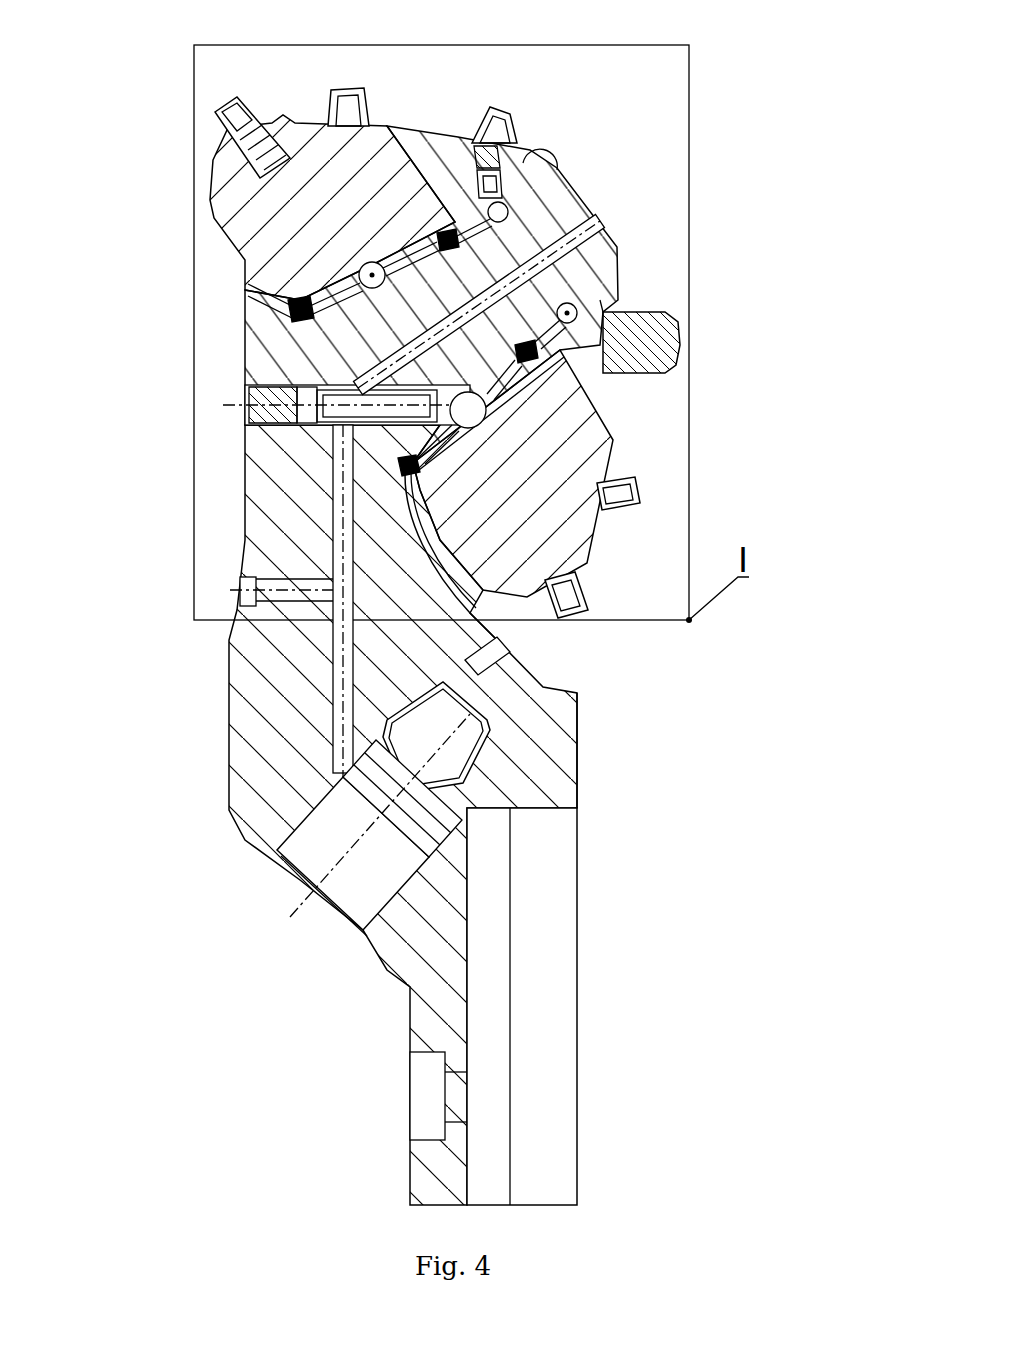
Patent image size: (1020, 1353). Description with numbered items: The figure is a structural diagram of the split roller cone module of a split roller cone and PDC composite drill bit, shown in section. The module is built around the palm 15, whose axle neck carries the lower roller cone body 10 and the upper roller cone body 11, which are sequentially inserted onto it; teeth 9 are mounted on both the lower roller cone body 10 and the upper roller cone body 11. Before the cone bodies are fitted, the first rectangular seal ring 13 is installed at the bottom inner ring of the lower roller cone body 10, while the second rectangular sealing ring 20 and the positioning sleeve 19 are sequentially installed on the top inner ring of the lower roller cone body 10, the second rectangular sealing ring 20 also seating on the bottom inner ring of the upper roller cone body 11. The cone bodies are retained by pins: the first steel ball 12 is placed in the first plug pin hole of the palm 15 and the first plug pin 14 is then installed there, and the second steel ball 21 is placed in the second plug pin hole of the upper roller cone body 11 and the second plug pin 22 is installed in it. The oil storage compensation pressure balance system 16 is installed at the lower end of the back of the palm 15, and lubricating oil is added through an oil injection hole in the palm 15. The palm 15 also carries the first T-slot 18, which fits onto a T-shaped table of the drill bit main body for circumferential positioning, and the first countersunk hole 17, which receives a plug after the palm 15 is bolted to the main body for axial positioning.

The tooth 9 is at (199, 116).
The lower roller cone body 10 is at (277, 207).
The upper roller cone body 11 is at (359, 294).
The first steel ball 12 is at (242, 288).
The first rectangular seal ring 13 is at (231, 333).
The first plug pin 14 is at (293, 430).
The palm 15 is at (338, 815).
The oil storage compensation pressure balance system 16 is at (305, 680).
The first countersunk hole 17 is at (283, 1055).
The first T-slot 18 is at (620, 949).
The positioning sleeve 19 is at (589, 481).
The second rectangular sealing ring 20 is at (680, 319).
The second steel ball 21 is at (564, 284).
The second plug pin 22 is at (622, 119).